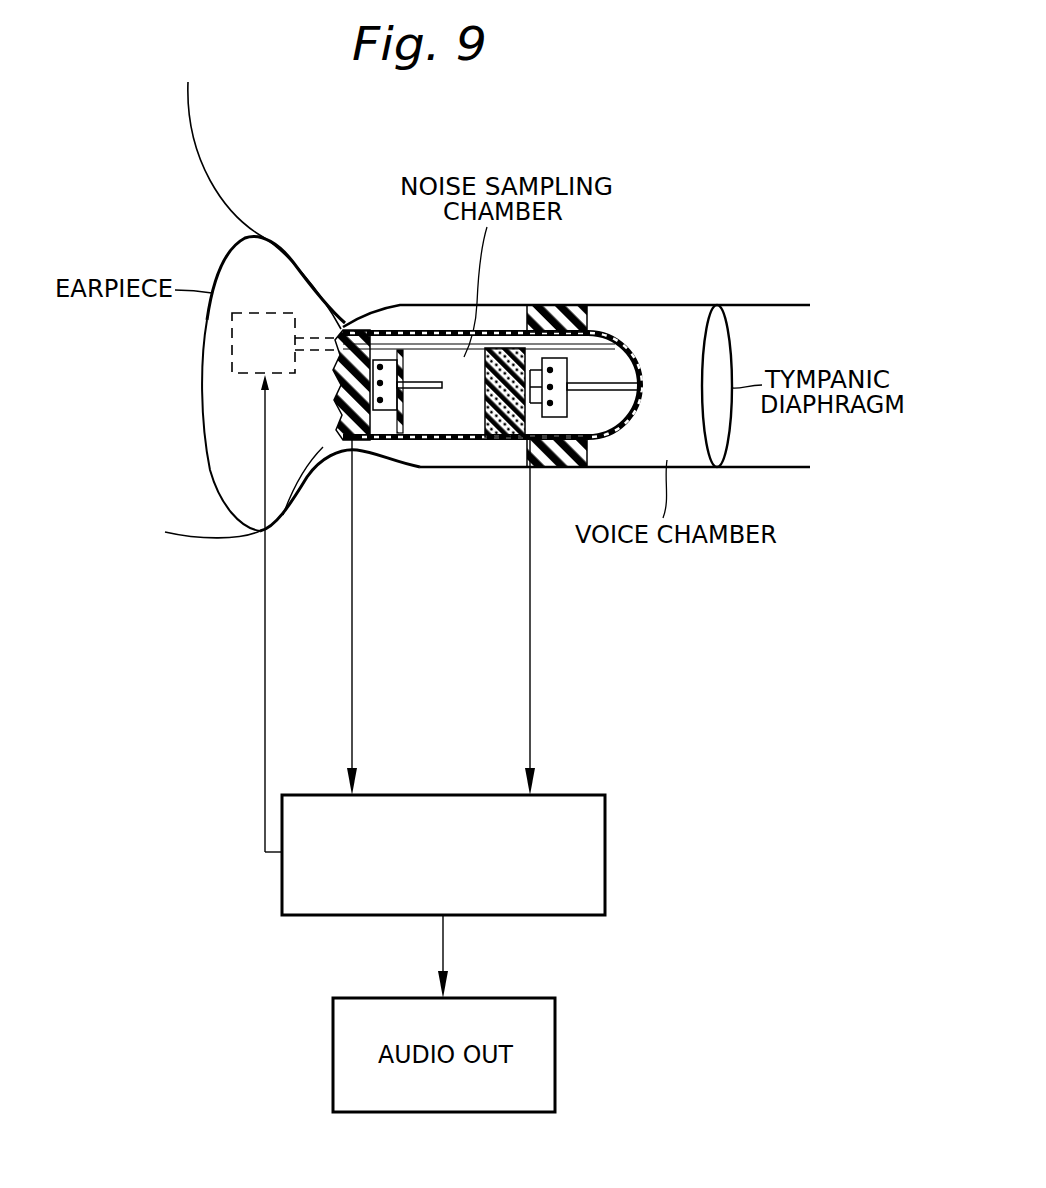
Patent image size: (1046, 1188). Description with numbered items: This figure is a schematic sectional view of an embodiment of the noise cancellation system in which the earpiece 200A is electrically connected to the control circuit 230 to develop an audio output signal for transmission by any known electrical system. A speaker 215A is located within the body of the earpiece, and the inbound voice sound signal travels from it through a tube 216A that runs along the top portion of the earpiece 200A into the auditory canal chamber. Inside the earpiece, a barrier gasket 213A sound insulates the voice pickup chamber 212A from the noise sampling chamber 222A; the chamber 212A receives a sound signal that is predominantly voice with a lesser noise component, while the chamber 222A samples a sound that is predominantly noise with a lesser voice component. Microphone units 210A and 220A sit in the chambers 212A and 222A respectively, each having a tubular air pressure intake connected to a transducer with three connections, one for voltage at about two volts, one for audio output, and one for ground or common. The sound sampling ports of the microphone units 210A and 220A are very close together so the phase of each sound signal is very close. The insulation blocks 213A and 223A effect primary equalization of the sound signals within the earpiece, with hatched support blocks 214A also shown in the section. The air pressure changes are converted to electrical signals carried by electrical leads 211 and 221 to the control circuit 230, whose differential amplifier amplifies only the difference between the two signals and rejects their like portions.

The earpiece 200A is at (435, 310).
The microphone unit 210A is at (604, 400).
The electrical lead 211 is at (530, 700).
The voice pickup chamber 212A is at (622, 350).
The barrier gasket 213A is at (503, 430).
The support block 214A is at (558, 305).
The speaker 215A is at (250, 312).
The tube 216A is at (313, 352).
The microphone unit 220A is at (421, 405).
The electrical lead 221 is at (352, 700).
The noise sampling chamber 222A is at (470, 415).
The insulation block 223A is at (353, 327).
The control circuit 230 is at (605, 855).